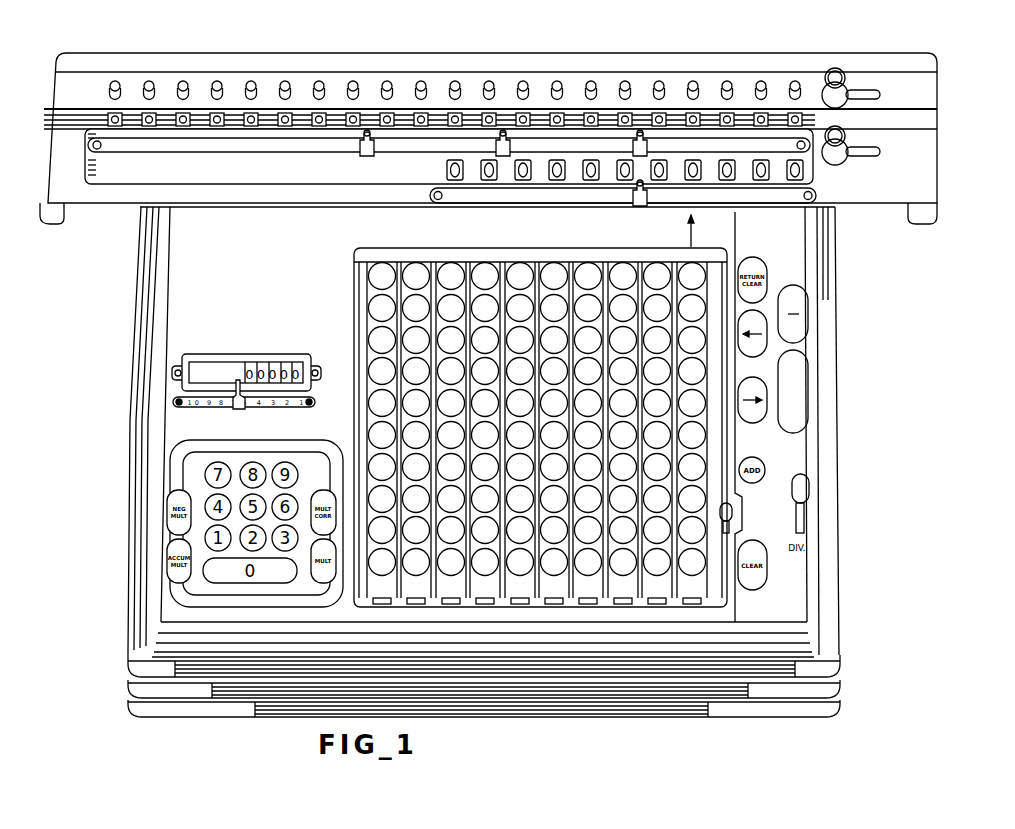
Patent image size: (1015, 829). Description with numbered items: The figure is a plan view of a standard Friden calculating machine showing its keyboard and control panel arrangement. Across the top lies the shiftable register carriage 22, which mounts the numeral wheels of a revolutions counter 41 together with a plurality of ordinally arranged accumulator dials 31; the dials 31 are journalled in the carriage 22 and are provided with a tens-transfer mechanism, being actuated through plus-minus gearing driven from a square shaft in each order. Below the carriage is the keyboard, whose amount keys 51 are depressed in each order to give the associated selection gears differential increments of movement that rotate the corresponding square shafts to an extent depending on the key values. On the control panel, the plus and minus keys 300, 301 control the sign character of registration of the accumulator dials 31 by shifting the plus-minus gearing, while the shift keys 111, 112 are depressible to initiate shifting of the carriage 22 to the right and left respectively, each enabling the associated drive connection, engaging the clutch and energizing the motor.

The register carriage 22 is at (524, 128).
The accumulator dials 31 is at (698, 118).
The revolutions counter 41 is at (797, 172).
The keyboard amount key 51 is at (592, 536).
The shift key 111 is at (752, 414).
The shift key 112 is at (757, 320).
The plus key 300 is at (793, 388).
The minus key 301 is at (795, 324).